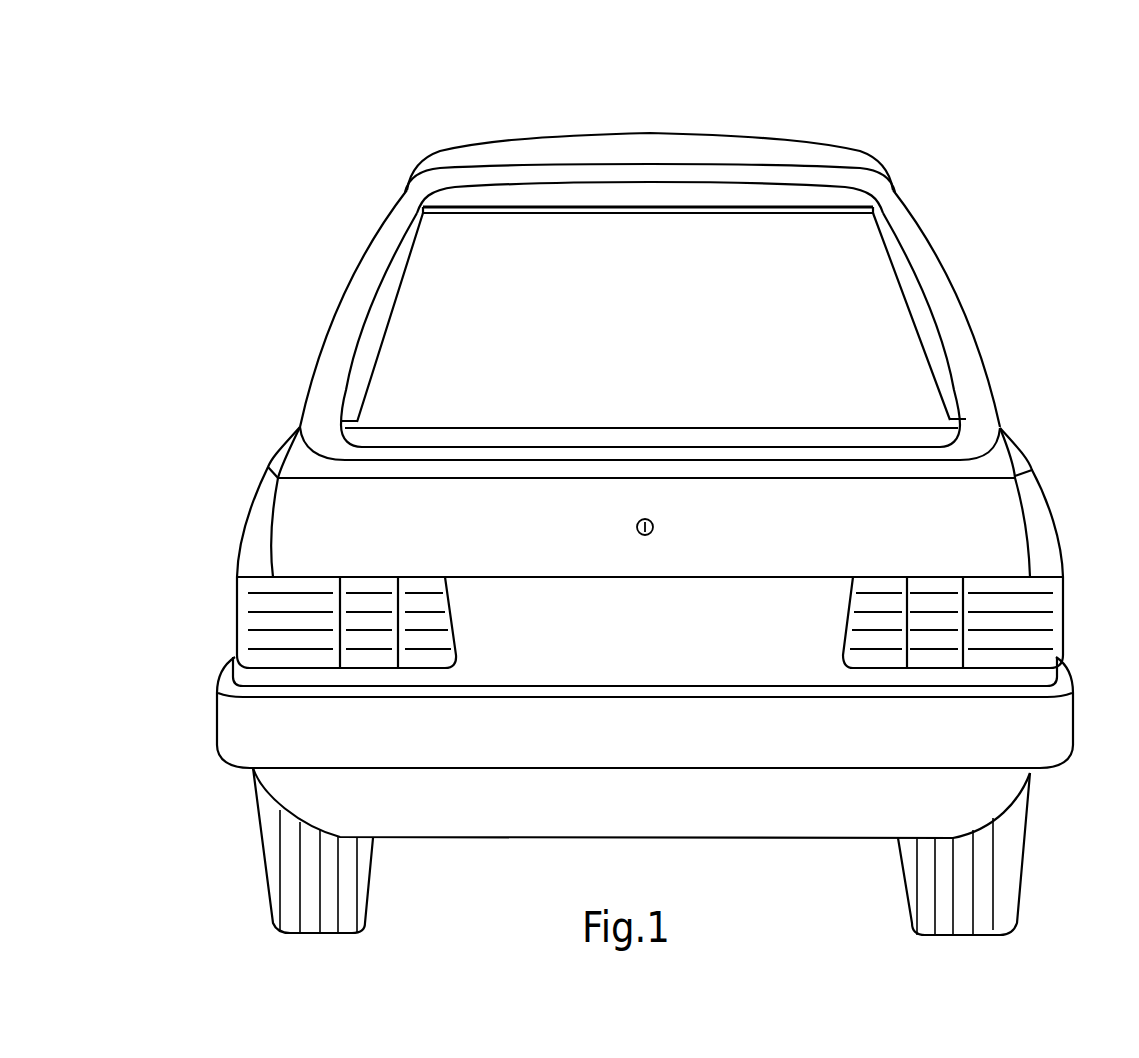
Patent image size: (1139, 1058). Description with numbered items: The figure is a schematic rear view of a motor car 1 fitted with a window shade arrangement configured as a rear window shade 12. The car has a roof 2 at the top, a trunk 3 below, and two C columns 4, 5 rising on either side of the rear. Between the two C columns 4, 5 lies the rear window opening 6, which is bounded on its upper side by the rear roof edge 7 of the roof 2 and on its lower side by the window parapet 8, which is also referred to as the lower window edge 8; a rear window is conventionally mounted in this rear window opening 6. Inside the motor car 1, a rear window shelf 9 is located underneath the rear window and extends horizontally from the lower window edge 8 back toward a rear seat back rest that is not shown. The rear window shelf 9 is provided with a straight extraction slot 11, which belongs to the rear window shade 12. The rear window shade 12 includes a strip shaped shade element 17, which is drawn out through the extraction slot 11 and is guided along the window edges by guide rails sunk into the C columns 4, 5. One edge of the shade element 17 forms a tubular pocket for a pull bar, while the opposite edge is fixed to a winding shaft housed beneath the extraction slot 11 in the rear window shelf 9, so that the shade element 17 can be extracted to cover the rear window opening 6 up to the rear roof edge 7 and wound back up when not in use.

The motor car 1 is at (922, 184).
The roof 2 is at (582, 133).
The trunk 3 is at (246, 446).
The C column 4 is at (367, 287).
The C column 5 is at (933, 280).
The rear window opening 6 is at (933, 316).
The tailgate frame 7 is at (672, 183).
The window parapet 8 is at (846, 445).
The rear window shelf 9 is at (518, 435).
The extraction slot 11 is at (968, 412).
The rear window shade 12 is at (275, 320).
The shade element 17 is at (655, 345).